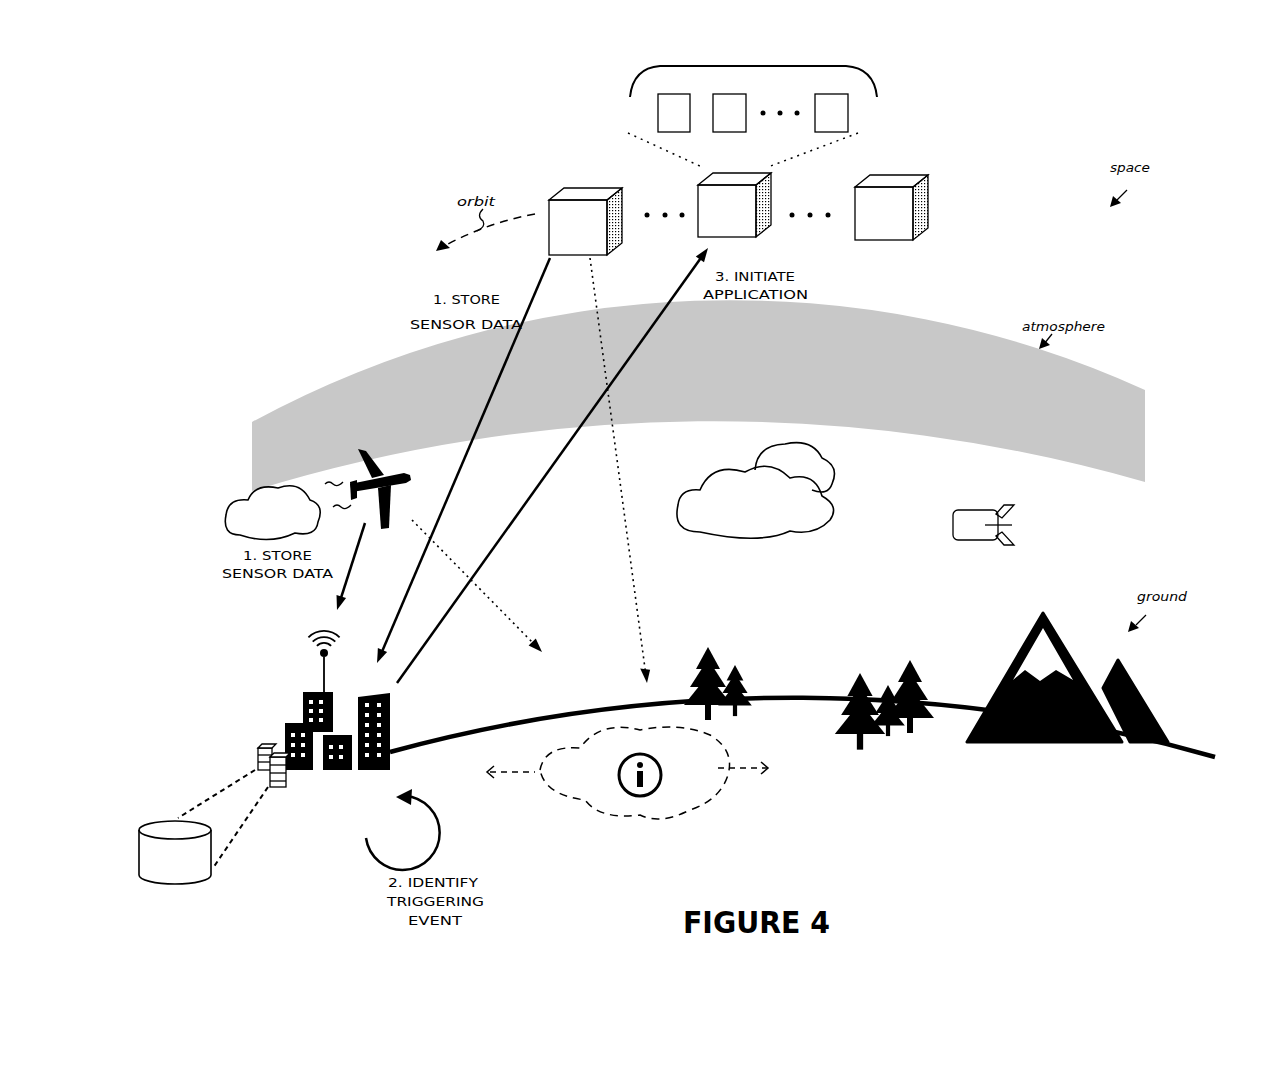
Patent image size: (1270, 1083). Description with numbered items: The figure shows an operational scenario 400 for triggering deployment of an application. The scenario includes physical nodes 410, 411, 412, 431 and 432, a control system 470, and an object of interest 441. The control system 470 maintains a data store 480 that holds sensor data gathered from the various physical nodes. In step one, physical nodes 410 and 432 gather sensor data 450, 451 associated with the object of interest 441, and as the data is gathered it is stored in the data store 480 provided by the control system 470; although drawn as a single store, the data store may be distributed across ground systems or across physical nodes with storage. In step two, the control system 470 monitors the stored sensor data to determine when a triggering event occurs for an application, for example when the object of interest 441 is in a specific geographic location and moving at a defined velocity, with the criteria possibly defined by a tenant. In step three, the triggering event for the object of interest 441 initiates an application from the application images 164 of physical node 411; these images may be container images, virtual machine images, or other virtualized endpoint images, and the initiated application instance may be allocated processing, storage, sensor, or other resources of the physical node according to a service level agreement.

The operational scenario 400 is at (160, 66).
The application images 164 is at (753, 66).
The physical node 410 is at (585, 221).
The physical node 411 is at (734, 205).
The physical node 412 is at (891, 207).
The physical node 432 is at (394, 472).
The physical node 431 is at (970, 508).
The sensor data 450 is at (511, 586).
The sensor data 451 is at (670, 470).
The control system 470 is at (279, 786).
The data store 480 is at (203, 827).
The object of interest 441 is at (627, 805).